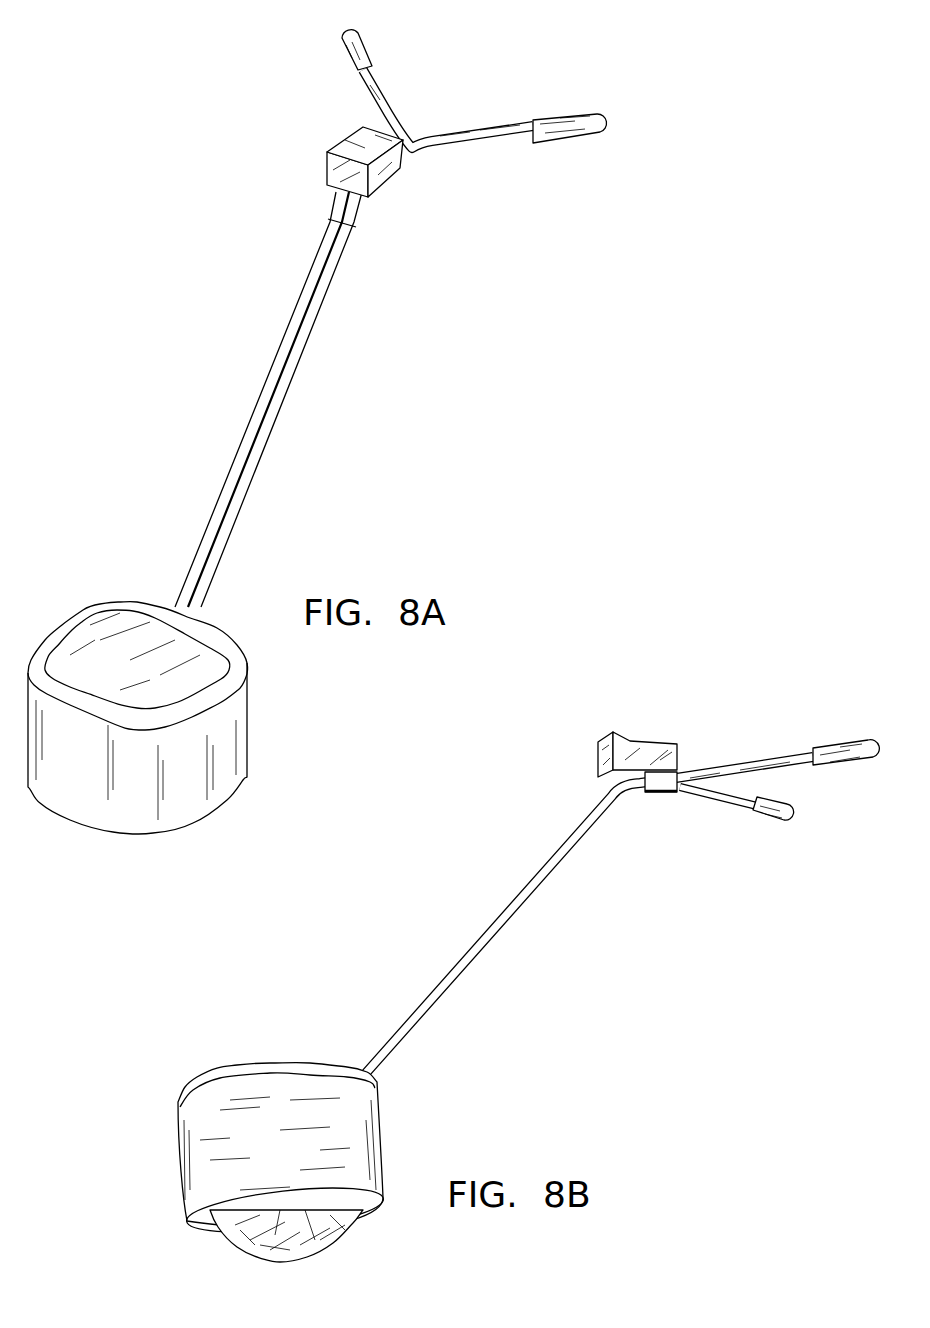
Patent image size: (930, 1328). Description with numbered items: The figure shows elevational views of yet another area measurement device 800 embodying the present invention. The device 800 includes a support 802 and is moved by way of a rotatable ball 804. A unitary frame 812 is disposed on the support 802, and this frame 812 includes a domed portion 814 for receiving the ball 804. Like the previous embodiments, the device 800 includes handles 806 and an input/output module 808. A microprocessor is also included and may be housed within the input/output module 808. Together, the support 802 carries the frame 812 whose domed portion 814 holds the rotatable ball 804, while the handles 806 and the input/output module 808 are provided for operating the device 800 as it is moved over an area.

In FIG. 8A, the area measurement device 800 is at (317, 432).
In FIG. 8B, the area measurement device 800 is at (510, 983).
In FIG. 8A, the support 802 is at (285, 417).
In FIG. 8B, the support 802 is at (495, 910).
In FIG. 8B, the rotatable ball 804 is at (338, 1233).
In FIG. 8A, the handles 806 is at (553, 110).
In FIG. 8B, the handles 806 is at (838, 770).
In FIG. 8A, the input/output module 808 is at (322, 168).
In FIG. 8B, the input/output module 808 is at (655, 737).
In FIG. 8A, the unitary frame 812 is at (247, 703).
In FIG. 8B, the unitary frame 812 is at (387, 1135).
In FIG. 8B, the domed portion 814 is at (212, 1228).